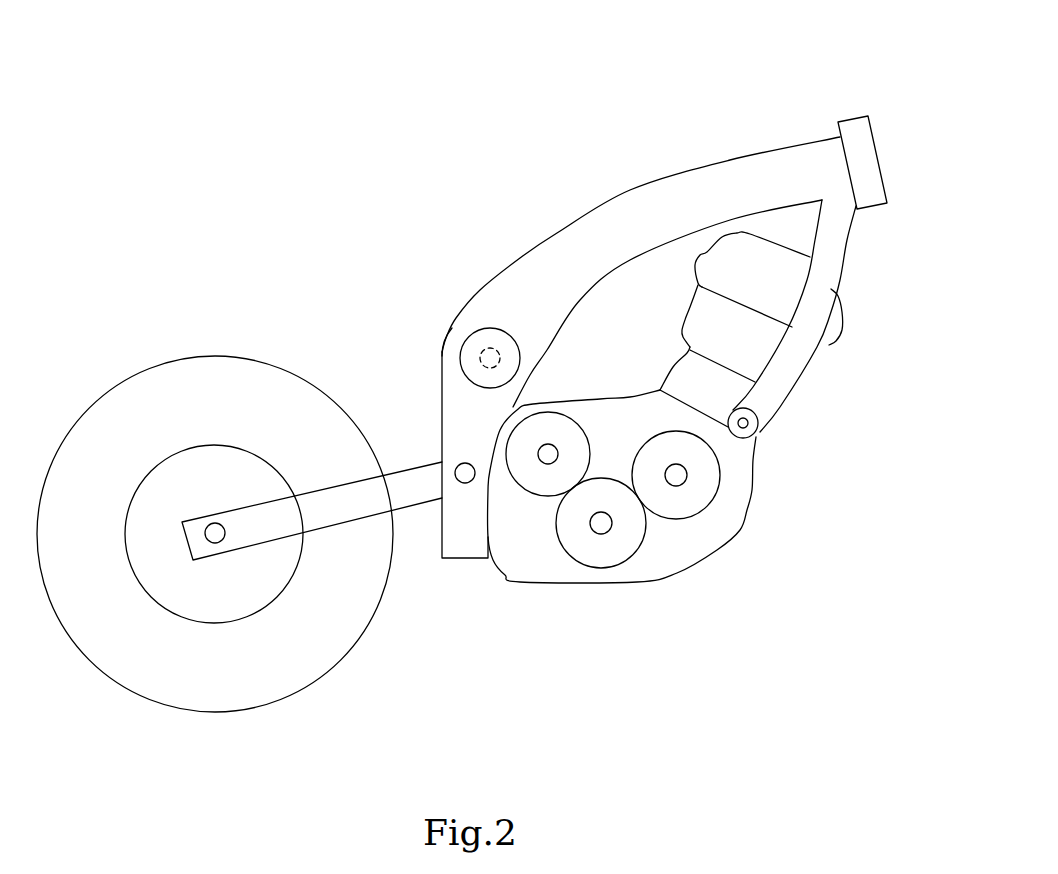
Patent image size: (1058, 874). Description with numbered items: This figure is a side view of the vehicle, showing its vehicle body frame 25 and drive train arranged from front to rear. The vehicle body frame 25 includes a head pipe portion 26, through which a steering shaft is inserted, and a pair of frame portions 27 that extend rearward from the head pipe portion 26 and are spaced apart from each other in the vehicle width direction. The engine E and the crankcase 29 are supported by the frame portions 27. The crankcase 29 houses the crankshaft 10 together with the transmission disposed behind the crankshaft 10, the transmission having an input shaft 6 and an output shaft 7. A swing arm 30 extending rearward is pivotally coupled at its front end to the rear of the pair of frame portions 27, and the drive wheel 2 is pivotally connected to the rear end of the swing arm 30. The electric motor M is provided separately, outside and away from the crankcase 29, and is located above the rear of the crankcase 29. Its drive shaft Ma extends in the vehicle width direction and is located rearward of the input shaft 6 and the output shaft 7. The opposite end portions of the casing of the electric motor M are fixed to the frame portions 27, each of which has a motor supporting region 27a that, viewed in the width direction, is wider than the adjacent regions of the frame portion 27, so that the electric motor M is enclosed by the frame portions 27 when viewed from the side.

The drive wheel 2 is at (180, 367).
The swing arm 30 is at (342, 493).
The frame portions 27 is at (558, 238).
The motor supporting region 27a is at (452, 340).
The electric motor M is at (490, 337).
The drive shaft Ma is at (463, 370).
The vehicle body frame 25 is at (693, 170).
The head pipe portion 26 is at (855, 127).
The engine E is at (842, 318).
The crankcase 29 is at (675, 573).
The output shaft 7 is at (547, 450).
The crankshaft 10 is at (680, 472).
The input shaft 6 is at (603, 525).